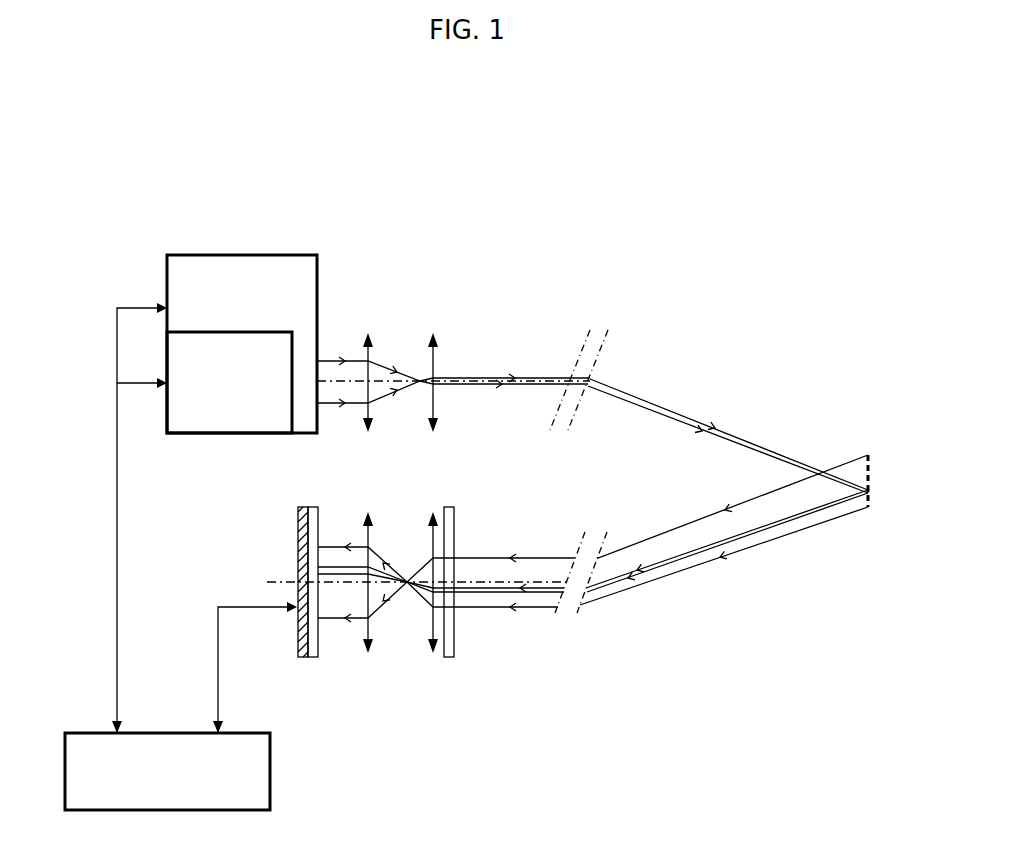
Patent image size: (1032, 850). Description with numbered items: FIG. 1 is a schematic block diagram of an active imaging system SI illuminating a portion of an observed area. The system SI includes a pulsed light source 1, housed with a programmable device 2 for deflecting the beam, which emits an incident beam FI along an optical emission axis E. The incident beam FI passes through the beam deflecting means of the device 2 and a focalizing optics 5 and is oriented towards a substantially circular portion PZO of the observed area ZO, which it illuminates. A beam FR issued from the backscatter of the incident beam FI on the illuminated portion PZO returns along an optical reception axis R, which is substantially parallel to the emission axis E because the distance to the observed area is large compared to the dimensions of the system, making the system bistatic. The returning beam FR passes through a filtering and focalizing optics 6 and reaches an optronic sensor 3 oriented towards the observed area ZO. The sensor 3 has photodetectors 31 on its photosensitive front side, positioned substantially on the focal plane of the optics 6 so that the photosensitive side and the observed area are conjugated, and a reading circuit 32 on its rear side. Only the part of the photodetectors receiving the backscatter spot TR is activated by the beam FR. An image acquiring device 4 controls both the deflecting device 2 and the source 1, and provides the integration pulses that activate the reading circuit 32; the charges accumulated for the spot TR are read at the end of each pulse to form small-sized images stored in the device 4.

The pulsed light source 1 is at (232, 425).
The programmable device 2 is at (232, 266).
The optronic sensor 3 is at (308, 625).
The photodetectors 31 is at (313, 660).
The reading circuit 32 is at (301, 660).
The image acquiring device 4 is at (81, 749).
The focalizing optics 5 is at (438, 331).
The filtering and focalizing optics 6 is at (460, 509).
The active imaging system SI is at (474, 200).
The optical emission axis E is at (592, 425).
The optical reception axis R is at (564, 538).
The incident beam FI is at (482, 378).
The backscattered beam FR is at (538, 598).
The observed area ZO is at (870, 454).
The portion of the observed area PZO is at (868, 510).
The backscatter spot TR is at (322, 563).